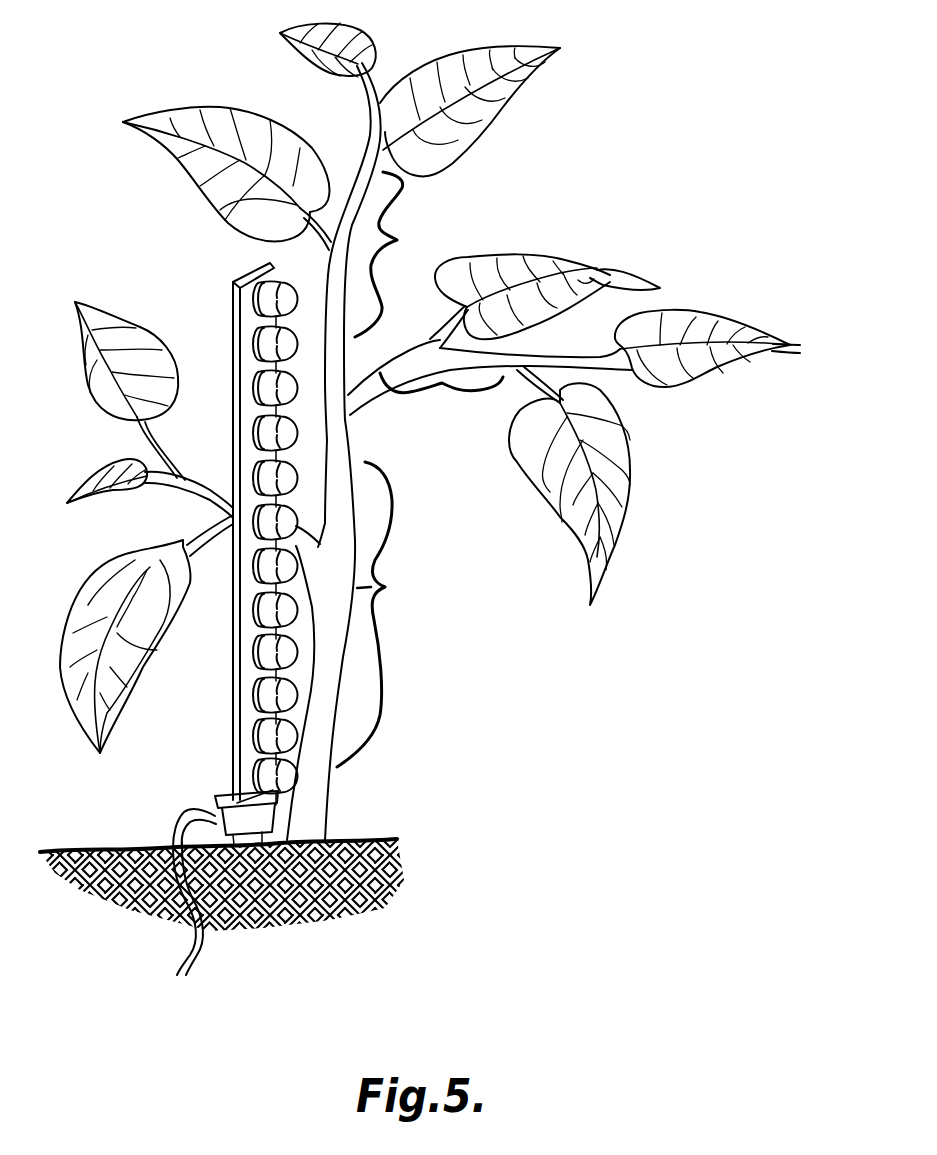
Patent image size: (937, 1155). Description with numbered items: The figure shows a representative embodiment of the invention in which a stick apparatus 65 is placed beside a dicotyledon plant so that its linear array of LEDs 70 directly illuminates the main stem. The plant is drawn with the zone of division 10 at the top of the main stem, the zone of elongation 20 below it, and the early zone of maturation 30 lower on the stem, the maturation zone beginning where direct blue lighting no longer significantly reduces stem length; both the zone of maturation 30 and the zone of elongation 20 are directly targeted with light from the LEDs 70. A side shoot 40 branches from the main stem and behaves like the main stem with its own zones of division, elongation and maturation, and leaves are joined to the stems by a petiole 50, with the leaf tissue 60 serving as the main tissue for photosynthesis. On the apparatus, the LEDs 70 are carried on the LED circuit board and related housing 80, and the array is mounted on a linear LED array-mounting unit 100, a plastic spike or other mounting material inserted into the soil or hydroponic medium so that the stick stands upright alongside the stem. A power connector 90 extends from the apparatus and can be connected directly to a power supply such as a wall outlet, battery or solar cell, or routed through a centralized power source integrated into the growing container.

The zone of division of the main stem 10 is at (348, 157).
The zone of elongation of the main stem 20 is at (401, 254).
The zone of maturation of the main stem 30 is at (367, 630).
The side shoot 40 is at (574, 429).
The petiole 50 is at (173, 541).
The leaf tissue 60 is at (140, 636).
The stick apparatus 65 is at (233, 397).
The LEDs 70 is at (257, 434).
The LED circuit board and related housing 80 is at (240, 747).
The power connector 90 is at (186, 926).
The linear LED array-mounting unit 100 is at (205, 843).